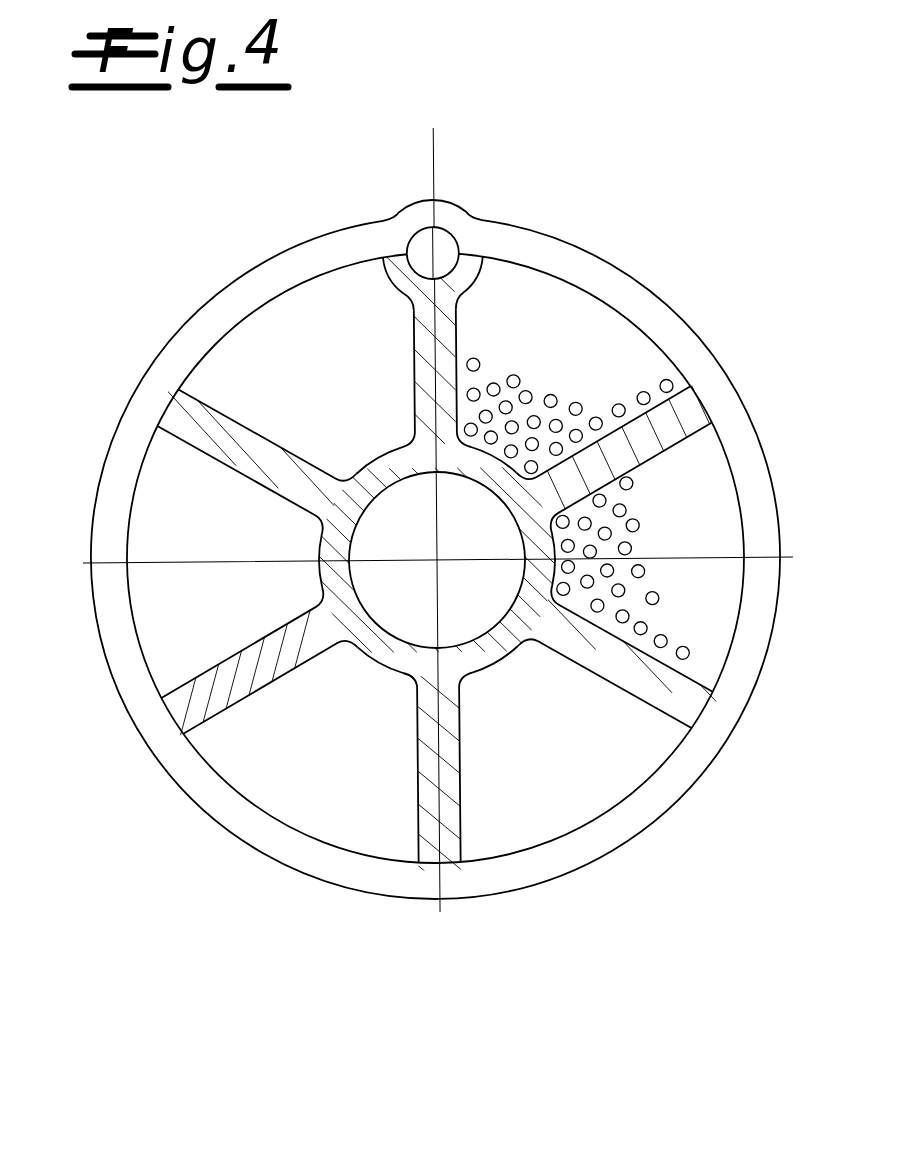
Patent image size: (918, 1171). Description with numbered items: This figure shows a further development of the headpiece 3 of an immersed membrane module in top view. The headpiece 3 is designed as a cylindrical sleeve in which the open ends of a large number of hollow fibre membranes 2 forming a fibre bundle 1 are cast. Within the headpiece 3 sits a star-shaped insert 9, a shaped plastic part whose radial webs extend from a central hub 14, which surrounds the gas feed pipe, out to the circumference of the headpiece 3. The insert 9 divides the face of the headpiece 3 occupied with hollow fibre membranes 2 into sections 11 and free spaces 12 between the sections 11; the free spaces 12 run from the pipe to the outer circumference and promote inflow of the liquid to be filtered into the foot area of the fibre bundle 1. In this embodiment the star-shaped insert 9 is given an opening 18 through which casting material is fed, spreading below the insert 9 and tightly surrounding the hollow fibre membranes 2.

The fibre bundle 1 is at (712, 667).
The hollow fibre membranes 2 is at (657, 596).
The headpiece 3 is at (286, 886).
The star-shaped insert 9 is at (708, 732).
The sections 11 is at (694, 478).
The free spaces 12 is at (590, 453).
The hub 14 is at (328, 546).
The opening 18 is at (450, 238).